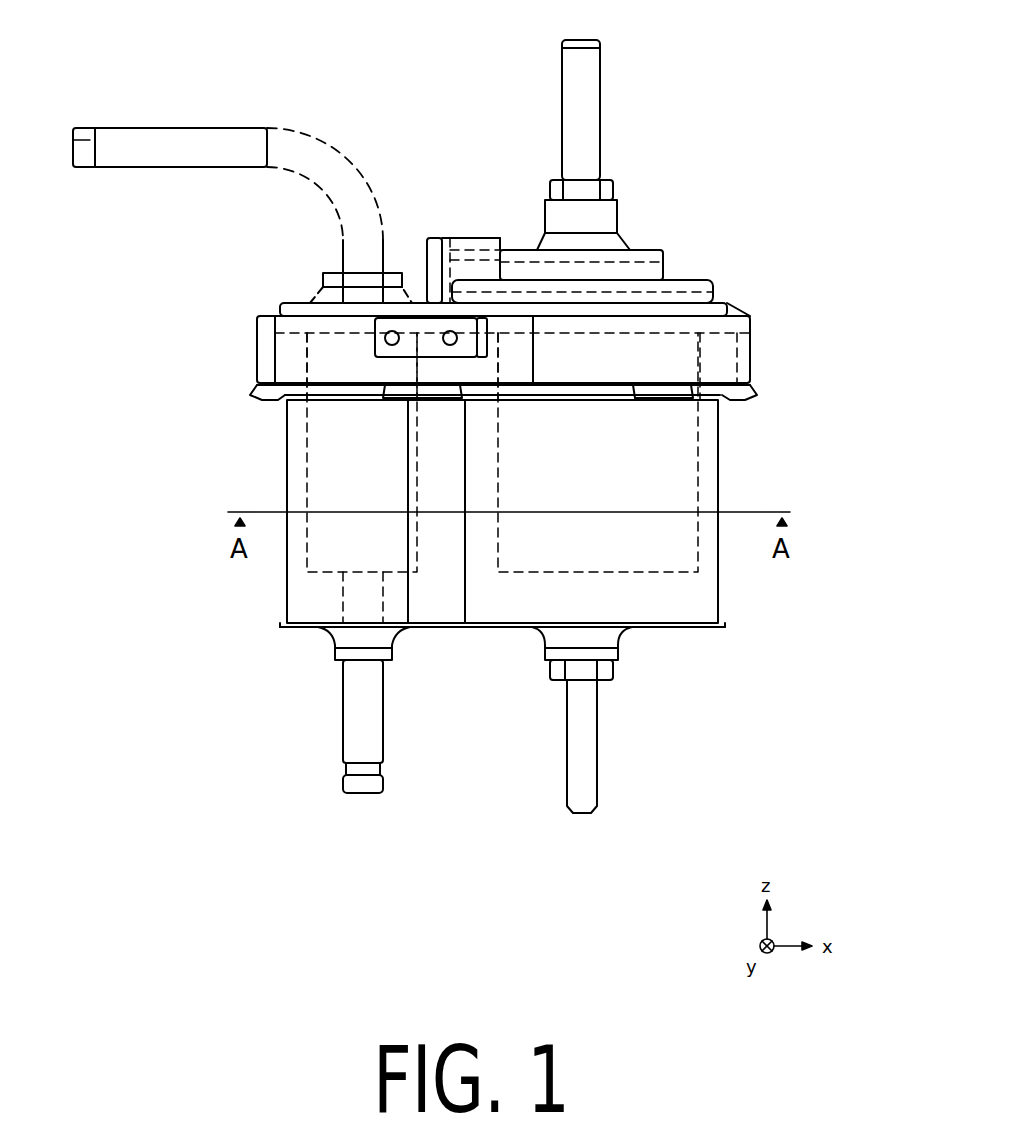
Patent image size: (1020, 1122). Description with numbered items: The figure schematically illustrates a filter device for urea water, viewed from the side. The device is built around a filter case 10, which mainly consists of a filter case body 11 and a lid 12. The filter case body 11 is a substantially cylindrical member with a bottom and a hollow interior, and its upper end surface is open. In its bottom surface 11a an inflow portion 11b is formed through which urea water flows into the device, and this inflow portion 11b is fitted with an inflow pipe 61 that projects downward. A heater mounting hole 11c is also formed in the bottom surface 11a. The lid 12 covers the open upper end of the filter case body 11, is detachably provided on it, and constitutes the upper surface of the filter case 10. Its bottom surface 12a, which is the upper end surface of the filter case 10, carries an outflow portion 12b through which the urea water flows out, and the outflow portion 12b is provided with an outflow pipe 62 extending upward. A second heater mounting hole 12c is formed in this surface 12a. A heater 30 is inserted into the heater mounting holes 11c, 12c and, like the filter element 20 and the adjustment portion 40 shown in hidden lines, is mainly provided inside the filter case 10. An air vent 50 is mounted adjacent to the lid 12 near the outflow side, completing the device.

The filter case 10 is at (817, 353).
The filter case body 11 is at (718, 468).
The bottom surface 11a is at (695, 630).
The inflow portion 11b is at (615, 655).
The heater mounting hole 11c is at (338, 640).
The lid 12 is at (752, 355).
The bottom surface 12a is at (727, 330).
The outflow portion 12b is at (607, 222).
The heater mounting hole 12c is at (333, 290).
The filter element 20 is at (698, 572).
The heater 30 is at (155, 147).
The adjustment portion 40 is at (310, 572).
The air vent 50 is at (450, 235).
The inflow pipe 61 is at (582, 738).
The outflow pipe 62 is at (592, 118).